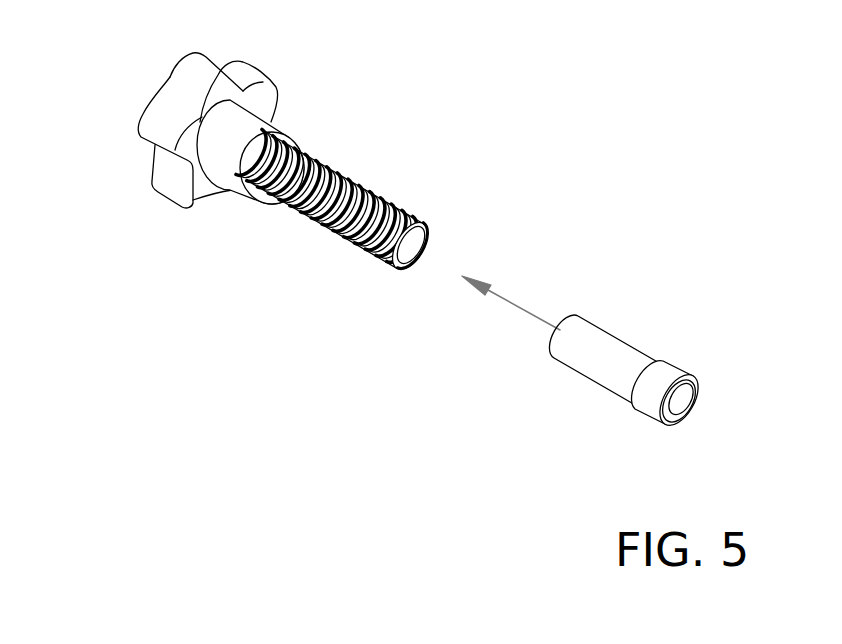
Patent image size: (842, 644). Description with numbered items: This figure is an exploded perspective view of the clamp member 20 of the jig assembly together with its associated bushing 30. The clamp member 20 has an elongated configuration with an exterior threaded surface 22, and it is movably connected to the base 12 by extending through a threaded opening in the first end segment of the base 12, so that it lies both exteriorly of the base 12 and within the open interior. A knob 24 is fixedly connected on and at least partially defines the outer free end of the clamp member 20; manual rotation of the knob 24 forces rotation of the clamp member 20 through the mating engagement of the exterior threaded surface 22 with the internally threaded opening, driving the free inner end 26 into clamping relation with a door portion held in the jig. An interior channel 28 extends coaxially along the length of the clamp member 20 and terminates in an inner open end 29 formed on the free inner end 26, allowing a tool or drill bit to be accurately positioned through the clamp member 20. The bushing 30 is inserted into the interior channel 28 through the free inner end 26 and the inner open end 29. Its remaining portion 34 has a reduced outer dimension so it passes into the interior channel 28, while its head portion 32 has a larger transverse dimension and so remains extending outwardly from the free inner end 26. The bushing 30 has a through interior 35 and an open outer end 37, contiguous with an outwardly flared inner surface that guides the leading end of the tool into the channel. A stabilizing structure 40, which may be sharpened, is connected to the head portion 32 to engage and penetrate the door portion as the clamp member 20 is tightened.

The base 12 is at (170, 77).
The clamp member 20 is at (317, 296).
The exterior threaded surface 22 is at (290, 198).
The knob 24 is at (244, 70).
The free inner end 26 is at (423, 264).
The interior channel 28 is at (412, 245).
The inner open end 29 is at (401, 274).
The bushing 30 is at (618, 316).
The head portion 32 is at (643, 418).
The remaining portion 34 is at (580, 373).
The interior 35 is at (688, 402).
The open outer end 37 is at (676, 424).
The stabilizing structure 40 is at (698, 378).